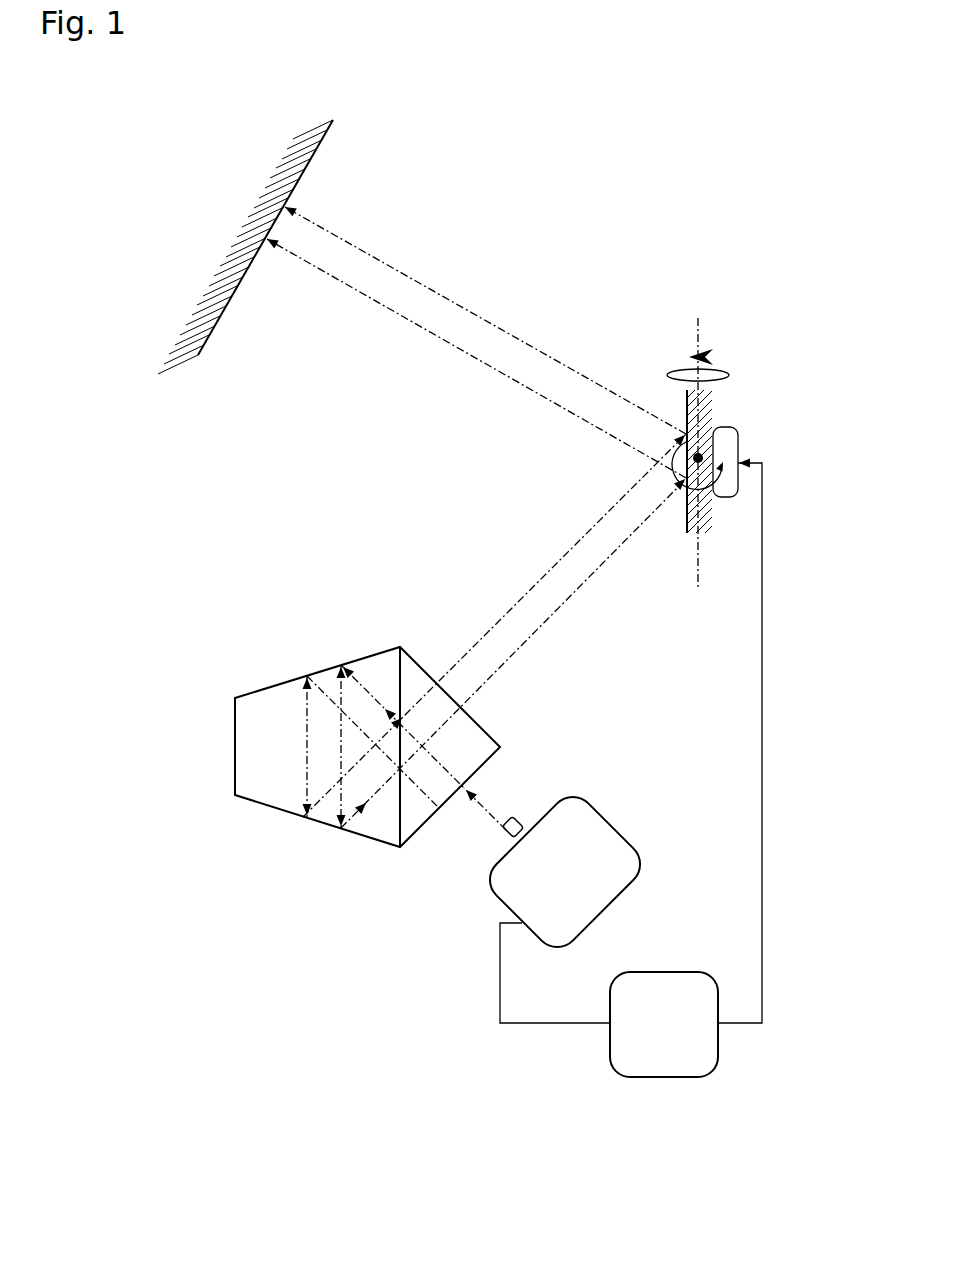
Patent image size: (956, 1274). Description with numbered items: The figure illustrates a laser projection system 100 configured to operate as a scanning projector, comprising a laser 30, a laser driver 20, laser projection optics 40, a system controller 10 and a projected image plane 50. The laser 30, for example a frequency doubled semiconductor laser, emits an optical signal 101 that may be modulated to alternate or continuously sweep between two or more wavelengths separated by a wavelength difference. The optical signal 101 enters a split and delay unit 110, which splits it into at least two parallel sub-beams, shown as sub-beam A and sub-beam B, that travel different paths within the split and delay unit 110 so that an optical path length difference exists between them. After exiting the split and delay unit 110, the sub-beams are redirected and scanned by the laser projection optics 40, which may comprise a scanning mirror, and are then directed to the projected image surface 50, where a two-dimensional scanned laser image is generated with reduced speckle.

The laser projection system 100 is at (751, 87).
The system controller 10 is at (665, 1077).
The laser driver 20 is at (651, 857).
The laser 30 is at (527, 815).
The laser projection optics 40 is at (727, 497).
The projected image plane 50 is at (333, 122).
The optical signal 101 is at (482, 806).
The split and delay unit 110 is at (280, 675).